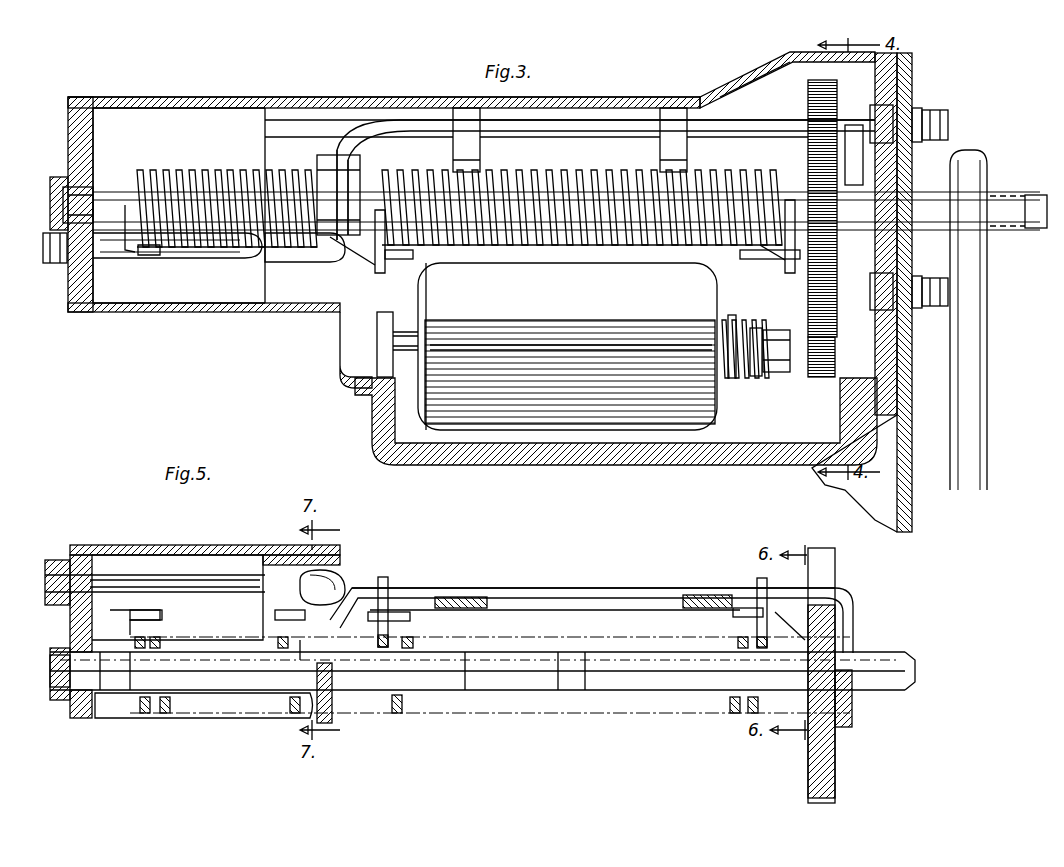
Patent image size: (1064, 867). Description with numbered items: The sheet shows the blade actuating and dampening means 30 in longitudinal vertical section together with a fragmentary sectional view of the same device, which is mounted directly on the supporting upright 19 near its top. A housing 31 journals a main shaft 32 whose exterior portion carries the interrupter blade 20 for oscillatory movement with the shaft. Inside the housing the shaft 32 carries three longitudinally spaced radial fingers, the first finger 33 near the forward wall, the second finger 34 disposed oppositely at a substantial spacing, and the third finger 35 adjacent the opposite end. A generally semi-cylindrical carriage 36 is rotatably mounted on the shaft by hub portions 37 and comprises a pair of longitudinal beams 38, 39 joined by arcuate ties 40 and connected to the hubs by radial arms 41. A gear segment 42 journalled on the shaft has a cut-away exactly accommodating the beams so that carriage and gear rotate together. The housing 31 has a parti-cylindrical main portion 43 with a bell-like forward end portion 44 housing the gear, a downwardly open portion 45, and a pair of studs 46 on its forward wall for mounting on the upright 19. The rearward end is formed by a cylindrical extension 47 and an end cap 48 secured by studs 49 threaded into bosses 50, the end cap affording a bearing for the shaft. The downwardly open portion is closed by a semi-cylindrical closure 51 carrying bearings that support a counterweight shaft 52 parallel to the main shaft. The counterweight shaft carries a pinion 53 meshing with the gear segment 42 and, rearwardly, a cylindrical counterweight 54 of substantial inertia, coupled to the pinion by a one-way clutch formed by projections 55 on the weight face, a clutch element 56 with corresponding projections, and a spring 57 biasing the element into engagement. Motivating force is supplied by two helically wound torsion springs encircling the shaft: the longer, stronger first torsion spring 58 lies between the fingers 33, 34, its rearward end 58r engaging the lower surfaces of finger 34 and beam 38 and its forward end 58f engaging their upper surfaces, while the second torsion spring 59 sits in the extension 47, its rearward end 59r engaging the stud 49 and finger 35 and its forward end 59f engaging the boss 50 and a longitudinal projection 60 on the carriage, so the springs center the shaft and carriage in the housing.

In FIG. 3, the supporting upright 19 is at (912, 510).
In FIG. 3, the interrupter blade 20 is at (987, 352).
In FIG. 5, the blade actuating and dampening means 30 is at (565, 590).
In FIG. 3, the housing 31 is at (656, 89).
In FIG. 3, the main shaft 32 is at (78, 200).
In FIG. 5, the main shaft 32 is at (60, 700).
In FIG. 3, the first finger 33 is at (705, 262).
In FIG. 5, the first finger 33 is at (733, 614).
In FIG. 3, the second finger 34 is at (400, 260).
In FIG. 5, the second finger 34 is at (410, 617).
In FIG. 3, the third finger 35 is at (148, 258).
In FIG. 5, the third finger 35 is at (162, 618).
In FIG. 3, the carriage 36 is at (347, 129).
In FIG. 5, the carriage 36 is at (532, 583).
In FIG. 3, the hub portions 37 is at (345, 180).
In FIG. 5, the hub portions 37 is at (482, 671).
In FIG. 3, the longitudinal beam 38 is at (522, 262).
In FIG. 3, the longitudinal beam 39 is at (560, 125).
In FIG. 3, the arcuate ties 40 is at (478, 148).
In FIG. 5, the arcuate ties 40 is at (470, 608).
In FIG. 3, the radial arms 41 is at (337, 155).
In FIG. 5, the radial arms 41 is at (325, 723).
In FIG. 3, the gear segment 42 is at (808, 106).
In FIG. 5, the gear segment 42 is at (810, 768).
In FIG. 3, the main portion of housing 43 is at (590, 97).
In FIG. 5, the main portion of housing 43 is at (290, 545).
In FIG. 3, the bell-like forward end portion 44 is at (800, 82).
In FIG. 3, the downwardly extending portion 45 is at (340, 340).
In FIG. 3, the studs 46 is at (948, 118).
In FIG. 3, the cylindrical extension 47 is at (195, 97).
In FIG. 5, the cylindrical extension 47 is at (210, 545).
In FIG. 3, the end cap 48 is at (68, 290).
In FIG. 5, the end cap 48 is at (72, 626).
In FIG. 3, the studs 49 is at (240, 258).
In FIG. 5, the studs 49 is at (208, 595).
In FIG. 3, the bosses 50 is at (300, 262).
In FIG. 5, the bosses 50 is at (340, 572).
In FIG. 3, the semi-cylindrical closure 51 is at (602, 465).
In FIG. 3, the counterweight shaft 52 is at (778, 372).
In FIG. 3, the pinion 53 is at (818, 377).
In FIG. 3, the counterweight 54 is at (715, 420).
In FIG. 3, the projections 55 is at (722, 335).
In FIG. 3, the clutch element 56 is at (731, 315).
In FIG. 3, the spring 57 is at (755, 377).
In FIG. 3, the first torsion spring 58 is at (612, 178).
In FIG. 5, the first torsion spring 58 is at (397, 713).
In FIG. 3, the rearward end of spring 58 58r is at (375, 270).
In FIG. 5, the rearward end of spring 58 58r is at (390, 580).
In FIG. 3, the forward end of spring 58 58f is at (790, 275).
In FIG. 5, the forward end of spring 58 58f is at (757, 582).
In FIG. 3, the second torsion spring 59 is at (205, 172).
In FIG. 5, the second torsion spring 59 is at (150, 713).
In FIG. 3, the rearward end of spring 59 59r is at (128, 258).
In FIG. 5, the rearward end of spring 59 59r is at (140, 600).
In FIG. 5, the forward end of spring 59 59f is at (325, 555).
In FIG. 5, the longitudinal projection 60 is at (275, 617).